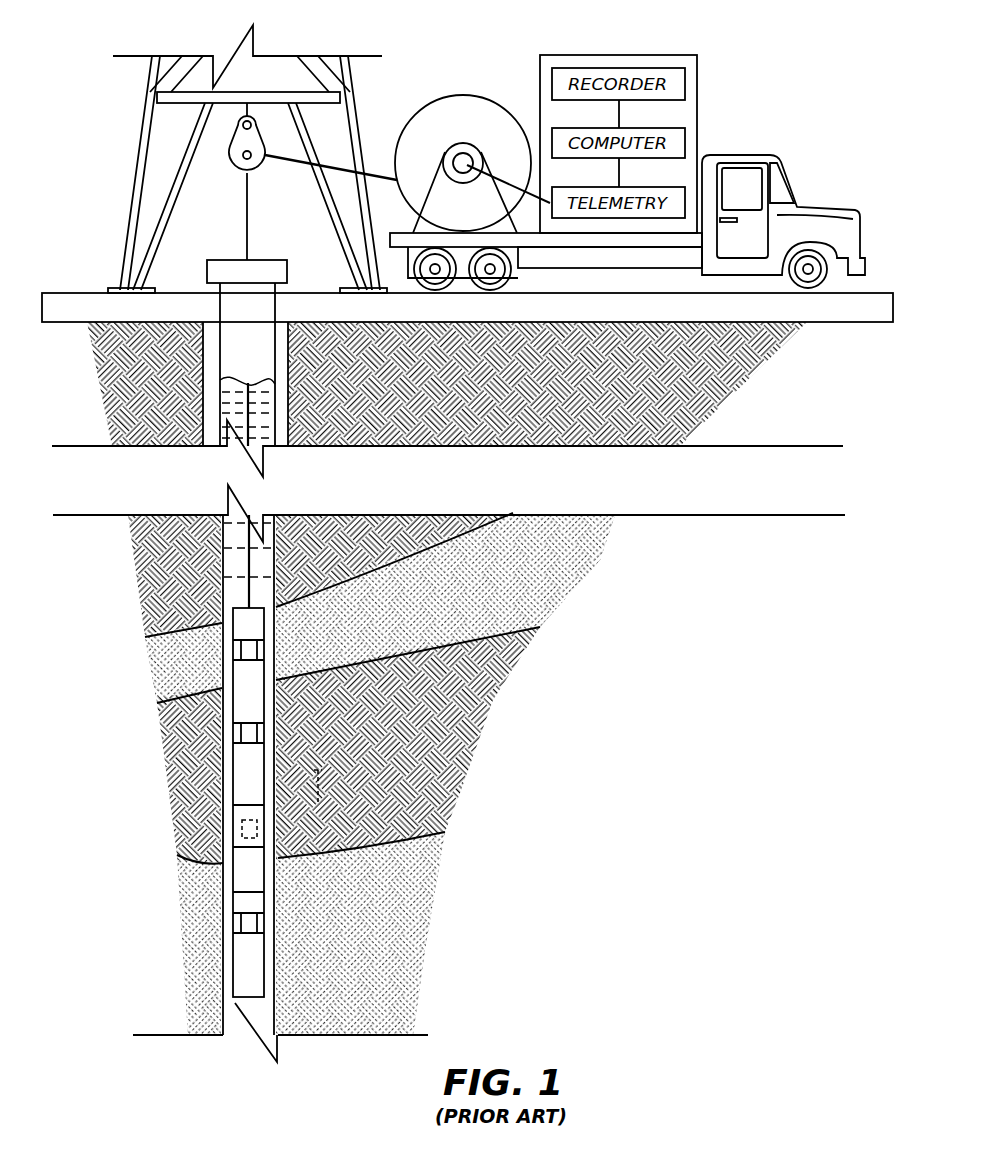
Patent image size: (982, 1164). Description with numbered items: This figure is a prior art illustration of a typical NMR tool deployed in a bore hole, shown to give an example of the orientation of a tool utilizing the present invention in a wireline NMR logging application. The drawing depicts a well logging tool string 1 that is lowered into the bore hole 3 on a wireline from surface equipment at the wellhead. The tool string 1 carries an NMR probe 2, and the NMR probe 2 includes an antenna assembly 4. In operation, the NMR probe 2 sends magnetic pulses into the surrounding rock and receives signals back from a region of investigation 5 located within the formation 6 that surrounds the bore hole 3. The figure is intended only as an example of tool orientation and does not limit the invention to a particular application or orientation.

The well logging tool string 1 is at (115, 588).
The NMR probe 2 is at (236, 816).
The bore hole 3 is at (212, 775).
The antenna assembly 4 is at (240, 838).
The region of investigation 5 is at (333, 778).
The formation 6 is at (485, 775).